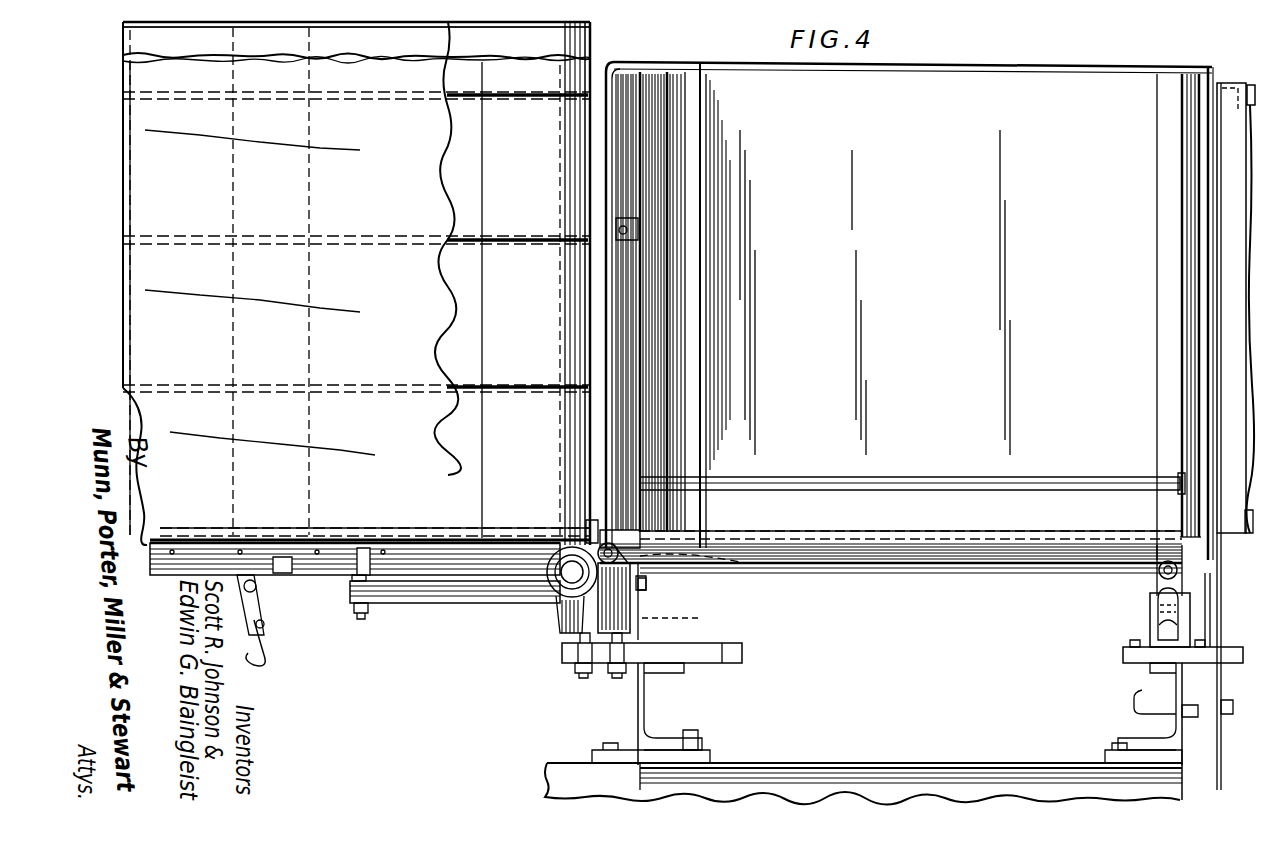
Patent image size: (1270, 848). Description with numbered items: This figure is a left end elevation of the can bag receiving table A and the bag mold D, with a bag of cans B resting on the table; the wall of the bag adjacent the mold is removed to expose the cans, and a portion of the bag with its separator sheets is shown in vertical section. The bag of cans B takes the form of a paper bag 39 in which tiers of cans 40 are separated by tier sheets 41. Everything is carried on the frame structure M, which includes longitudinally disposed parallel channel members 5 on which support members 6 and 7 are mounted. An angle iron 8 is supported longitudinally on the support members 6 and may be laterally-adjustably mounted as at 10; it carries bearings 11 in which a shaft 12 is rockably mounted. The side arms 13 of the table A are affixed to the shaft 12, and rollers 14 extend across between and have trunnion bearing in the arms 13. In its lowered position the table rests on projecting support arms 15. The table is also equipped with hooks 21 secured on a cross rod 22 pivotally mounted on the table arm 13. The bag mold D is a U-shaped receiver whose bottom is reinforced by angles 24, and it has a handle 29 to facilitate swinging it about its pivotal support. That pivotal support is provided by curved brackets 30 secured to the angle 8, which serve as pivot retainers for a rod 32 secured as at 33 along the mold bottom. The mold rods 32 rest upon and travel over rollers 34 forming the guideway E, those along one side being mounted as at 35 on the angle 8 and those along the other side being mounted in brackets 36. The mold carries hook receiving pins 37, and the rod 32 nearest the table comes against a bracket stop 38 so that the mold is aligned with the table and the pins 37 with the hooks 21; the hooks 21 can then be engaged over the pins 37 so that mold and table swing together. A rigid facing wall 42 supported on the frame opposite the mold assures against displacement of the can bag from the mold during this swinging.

The channel member 5 is at (645, 718).
The support member 6 is at (713, 645).
The support member 7 is at (1128, 660).
The angle iron 8 is at (634, 606).
The lateral adjustable mounting 10 is at (588, 670).
The bearing 11 is at (568, 578).
The shaft 12 is at (556, 576).
The side arm 13 is at (200, 556).
The roller 14 is at (318, 545).
The support arm 15 is at (420, 604).
The hook 21 is at (270, 652).
The cross rod 22 is at (265, 565).
The reinforcing angle 24 is at (995, 554).
The handle 29 is at (1061, 480).
The curved bracket 30 is at (592, 533).
The mold rod 32 is at (1158, 571).
The rod securing means 33 is at (600, 548).
The roller 34 is at (640, 578).
The roller mounting 35 is at (648, 592).
The bracket 36 is at (1152, 617).
The hook receiving pin 37 is at (630, 228).
The bracket stop 38 is at (612, 550).
The paper bag 39 is at (590, 22).
The tier of cans 40 is at (565, 186).
The tier sheet 41 is at (545, 245).
The rigid facing wall 42 is at (1205, 118).
The receiving table A is at (320, 581).
The bag of cans B is at (121, 79).
The bag mold D is at (908, 512).
The slideway E is at (642, 618).
The frame structure M is at (920, 744).